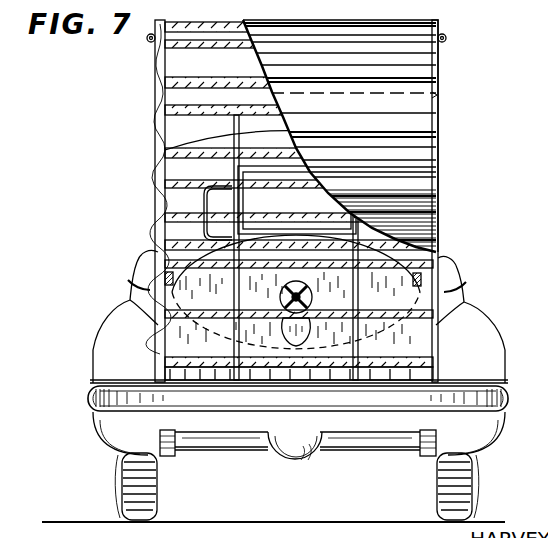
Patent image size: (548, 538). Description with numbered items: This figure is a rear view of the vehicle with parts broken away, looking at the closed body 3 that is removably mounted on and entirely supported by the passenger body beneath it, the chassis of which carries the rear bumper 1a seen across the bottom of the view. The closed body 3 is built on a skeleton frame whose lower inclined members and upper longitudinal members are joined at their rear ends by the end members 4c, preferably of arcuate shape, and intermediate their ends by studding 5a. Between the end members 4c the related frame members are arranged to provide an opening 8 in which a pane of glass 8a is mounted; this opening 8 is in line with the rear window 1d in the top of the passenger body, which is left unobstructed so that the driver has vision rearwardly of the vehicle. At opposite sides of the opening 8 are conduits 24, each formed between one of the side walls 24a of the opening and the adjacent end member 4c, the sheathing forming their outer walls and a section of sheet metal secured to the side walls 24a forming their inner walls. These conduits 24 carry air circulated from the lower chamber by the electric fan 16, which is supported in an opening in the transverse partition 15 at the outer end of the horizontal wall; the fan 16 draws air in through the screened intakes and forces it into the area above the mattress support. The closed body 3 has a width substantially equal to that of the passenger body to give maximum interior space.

The rear bumper 1a is at (504, 388).
The rear window 1d is at (204, 198).
The closed body 3 is at (458, 111).
The end member 4c is at (163, 117).
The studding 5a is at (220, 24).
The opening 8 is at (244, 207).
The pane of glass 8a is at (338, 192).
The transverse partition 15 is at (441, 263).
The electric fan 16 is at (290, 294).
The conduits 24 is at (299, 210).
The side walls 24a is at (231, 296).